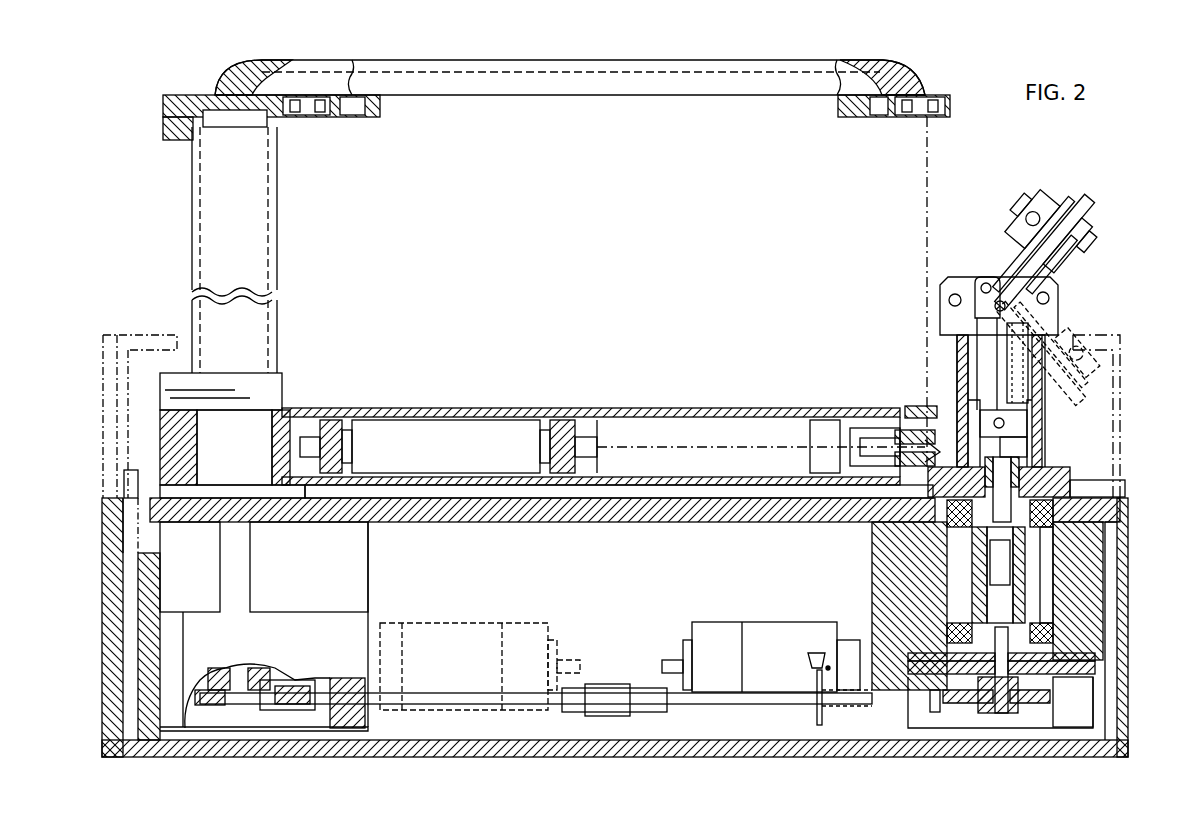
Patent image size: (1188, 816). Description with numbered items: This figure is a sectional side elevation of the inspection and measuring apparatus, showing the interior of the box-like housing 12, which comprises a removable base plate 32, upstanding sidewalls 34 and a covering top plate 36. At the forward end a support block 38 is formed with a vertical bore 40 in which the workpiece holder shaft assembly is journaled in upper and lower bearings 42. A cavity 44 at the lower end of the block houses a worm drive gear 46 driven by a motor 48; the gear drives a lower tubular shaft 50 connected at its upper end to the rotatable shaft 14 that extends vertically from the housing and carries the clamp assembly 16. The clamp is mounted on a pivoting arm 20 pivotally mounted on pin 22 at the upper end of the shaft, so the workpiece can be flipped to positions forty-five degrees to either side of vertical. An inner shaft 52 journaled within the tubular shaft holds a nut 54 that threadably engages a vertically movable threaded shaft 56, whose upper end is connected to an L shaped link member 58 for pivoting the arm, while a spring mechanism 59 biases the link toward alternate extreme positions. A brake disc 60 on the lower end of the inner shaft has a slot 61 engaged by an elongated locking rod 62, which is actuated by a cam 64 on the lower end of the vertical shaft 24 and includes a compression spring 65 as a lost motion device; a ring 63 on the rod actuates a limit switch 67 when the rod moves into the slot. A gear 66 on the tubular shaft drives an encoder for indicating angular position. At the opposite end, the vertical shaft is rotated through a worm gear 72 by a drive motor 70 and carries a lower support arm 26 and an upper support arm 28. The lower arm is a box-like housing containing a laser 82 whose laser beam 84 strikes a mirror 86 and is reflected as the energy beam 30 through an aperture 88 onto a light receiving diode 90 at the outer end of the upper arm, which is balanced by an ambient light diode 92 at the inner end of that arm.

The housing 12 is at (103, 626).
The rotatable shaft 14 is at (1046, 412).
The clamp assembly 16 is at (1094, 198).
The pivoting arm 20 is at (1012, 262).
The pin 22 is at (1012, 308).
The vertical shaft 24 is at (279, 230).
The lower support arm 26 is at (570, 408).
The upper support arm 28 is at (641, 60).
The energy beam 30 is at (927, 160).
The base plate 32 is at (622, 757).
The sidewalls 34 is at (1126, 566).
The top plate 36 is at (568, 523).
The support block 38 is at (1090, 580).
The vertical bore 40 is at (1048, 541).
The bearings 42 is at (1072, 497).
The cavity 44 is at (1082, 690).
The worm drive gear 46 is at (1075, 666).
The motor 48 is at (775, 622).
The lower tubular shaft 50 is at (900, 565).
The inner shaft 52 is at (985, 680).
The nut 54 is at (1002, 490).
The threaded shaft 56 is at (1012, 456).
The L shaped link member 58 is at (984, 366).
The spring mechanism 59 is at (1075, 345).
The brake disc 60 is at (1035, 697).
The slot 61 is at (936, 713).
The locking rod 62 is at (760, 705).
The ring 63 is at (818, 716).
The cam 64 is at (210, 706).
The compression spring 65 is at (640, 712).
The gear 66 is at (1085, 655).
The limit switch 67 is at (812, 660).
The drive motor 70 is at (440, 625).
The worm gear 72 is at (243, 668).
The laser 82 is at (470, 418).
The laser beam 84 is at (690, 440).
The mirror 86 is at (912, 440).
The aperture 88 is at (922, 440).
The light receiving diode 90 is at (924, 95).
The ambient light diode 92 is at (318, 116).